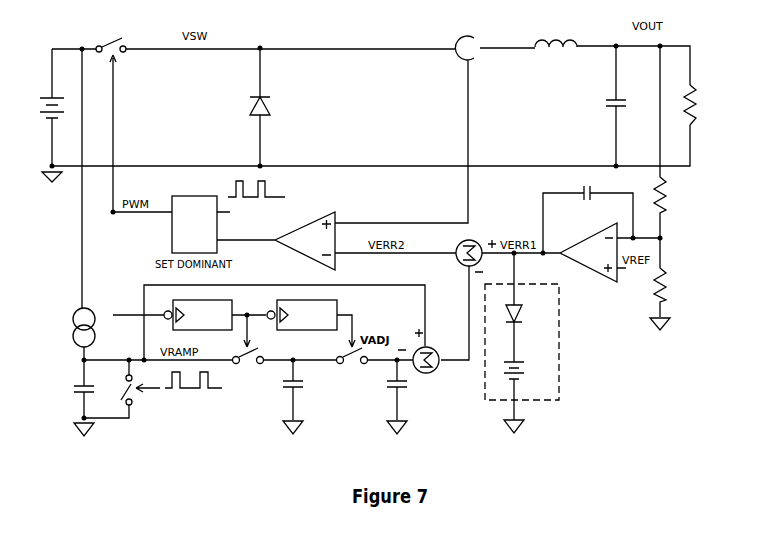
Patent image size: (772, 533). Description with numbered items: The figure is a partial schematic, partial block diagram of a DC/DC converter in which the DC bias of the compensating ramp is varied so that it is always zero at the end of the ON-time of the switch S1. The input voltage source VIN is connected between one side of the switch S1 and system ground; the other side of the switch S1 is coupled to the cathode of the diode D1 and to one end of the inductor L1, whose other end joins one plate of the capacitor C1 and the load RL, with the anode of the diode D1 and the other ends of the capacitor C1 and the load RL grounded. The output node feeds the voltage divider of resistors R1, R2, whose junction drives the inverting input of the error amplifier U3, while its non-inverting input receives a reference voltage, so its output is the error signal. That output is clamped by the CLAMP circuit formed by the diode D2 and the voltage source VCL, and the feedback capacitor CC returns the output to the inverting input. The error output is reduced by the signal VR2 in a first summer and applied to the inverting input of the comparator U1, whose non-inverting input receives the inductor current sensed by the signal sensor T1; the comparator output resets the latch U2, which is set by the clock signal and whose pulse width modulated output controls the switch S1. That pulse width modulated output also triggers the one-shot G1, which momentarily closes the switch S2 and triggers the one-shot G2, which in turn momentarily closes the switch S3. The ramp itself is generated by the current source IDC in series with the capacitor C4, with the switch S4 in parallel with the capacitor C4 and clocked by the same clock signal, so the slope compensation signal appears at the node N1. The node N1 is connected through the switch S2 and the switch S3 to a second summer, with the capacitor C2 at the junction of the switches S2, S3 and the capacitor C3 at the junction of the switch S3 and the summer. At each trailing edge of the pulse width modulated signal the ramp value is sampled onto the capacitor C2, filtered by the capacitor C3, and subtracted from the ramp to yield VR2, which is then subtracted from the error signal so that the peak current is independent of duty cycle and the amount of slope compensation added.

The input voltage source VIN is at (41, 115).
The switch S1 is at (111, 117).
The diode D1 is at (253, 107).
The signal sensor T1 is at (404, 123).
The inductor L1 is at (556, 57).
The capacitor C1 is at (625, 106).
The load RL is at (703, 105).
The resistor R1 is at (674, 142).
The resistor R2 is at (672, 284).
The error amplifier U3 is at (571, 246).
The feedback capacitor CC is at (588, 213).
The clamp circuit CLAMP is at (542, 344).
The diode D2 is at (525, 307).
The voltage source VCL is at (530, 397).
The comparator U1 is at (276, 244).
The latch U2 is at (199, 217).
The one-shot G1 is at (215, 323).
The one-shot G2 is at (311, 323).
The switch S2 is at (248, 362).
The switch S3 is at (352, 362).
The capacitor C2 is at (301, 397).
The capacitor C3 is at (405, 397).
The output of summer Σ2 VR2 is at (438, 352).
The current source IDC is at (72, 334).
The node N1 is at (66, 362).
The capacitor C4 is at (76, 398).
The switch S4 is at (153, 389).